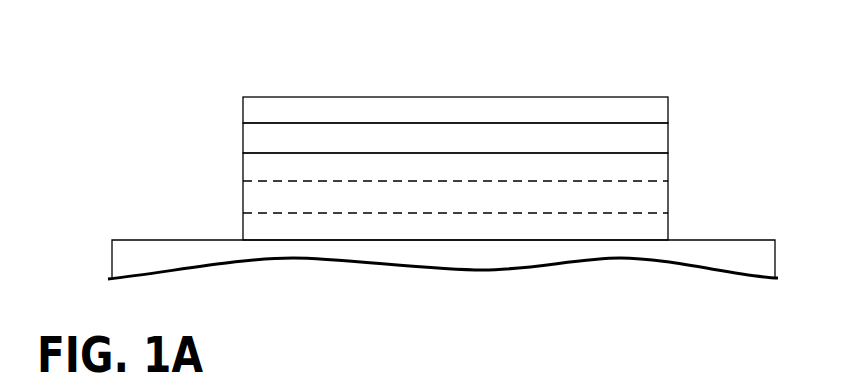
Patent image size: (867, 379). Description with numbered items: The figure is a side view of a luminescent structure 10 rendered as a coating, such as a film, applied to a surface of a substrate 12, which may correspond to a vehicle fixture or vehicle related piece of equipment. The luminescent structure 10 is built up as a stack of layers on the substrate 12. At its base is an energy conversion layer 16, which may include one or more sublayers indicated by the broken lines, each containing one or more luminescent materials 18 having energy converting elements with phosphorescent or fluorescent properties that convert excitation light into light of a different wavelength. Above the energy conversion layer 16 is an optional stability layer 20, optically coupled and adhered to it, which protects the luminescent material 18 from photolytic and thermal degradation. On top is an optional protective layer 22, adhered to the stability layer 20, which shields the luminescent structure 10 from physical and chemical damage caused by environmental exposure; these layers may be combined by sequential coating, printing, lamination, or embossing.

The luminescent structure 10 is at (447, 135).
The substrate 12 is at (716, 240).
The energy conversion layer 16 is at (447, 171).
The luminescent material 18 is at (622, 197).
The stability layer 20 is at (243, 137).
The protective layer 22 is at (336, 97).